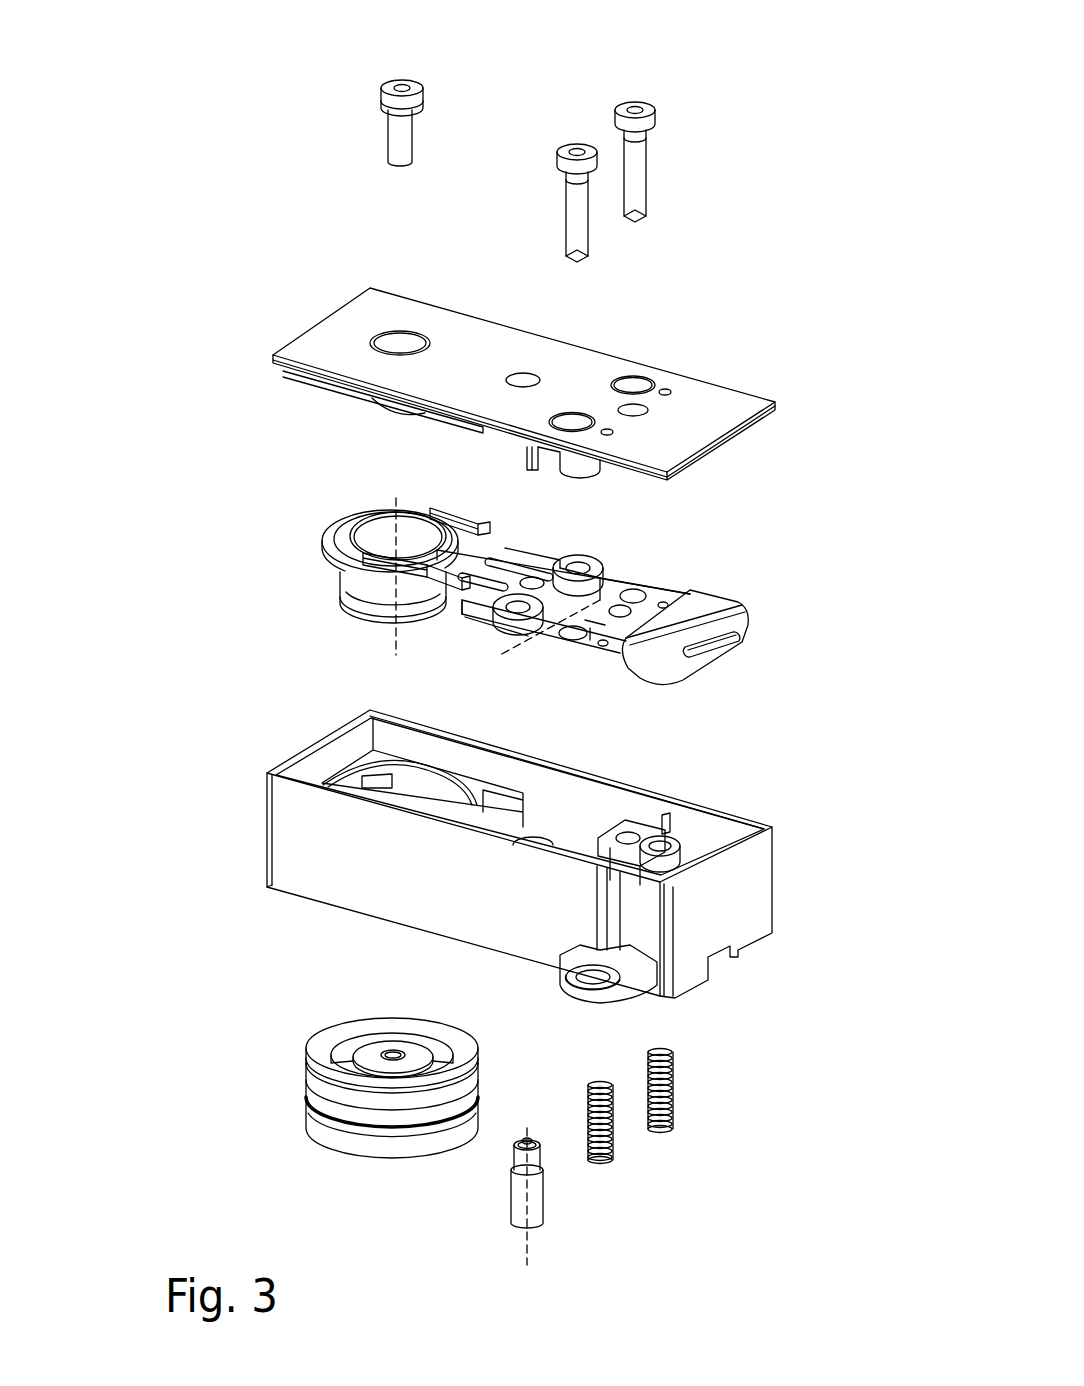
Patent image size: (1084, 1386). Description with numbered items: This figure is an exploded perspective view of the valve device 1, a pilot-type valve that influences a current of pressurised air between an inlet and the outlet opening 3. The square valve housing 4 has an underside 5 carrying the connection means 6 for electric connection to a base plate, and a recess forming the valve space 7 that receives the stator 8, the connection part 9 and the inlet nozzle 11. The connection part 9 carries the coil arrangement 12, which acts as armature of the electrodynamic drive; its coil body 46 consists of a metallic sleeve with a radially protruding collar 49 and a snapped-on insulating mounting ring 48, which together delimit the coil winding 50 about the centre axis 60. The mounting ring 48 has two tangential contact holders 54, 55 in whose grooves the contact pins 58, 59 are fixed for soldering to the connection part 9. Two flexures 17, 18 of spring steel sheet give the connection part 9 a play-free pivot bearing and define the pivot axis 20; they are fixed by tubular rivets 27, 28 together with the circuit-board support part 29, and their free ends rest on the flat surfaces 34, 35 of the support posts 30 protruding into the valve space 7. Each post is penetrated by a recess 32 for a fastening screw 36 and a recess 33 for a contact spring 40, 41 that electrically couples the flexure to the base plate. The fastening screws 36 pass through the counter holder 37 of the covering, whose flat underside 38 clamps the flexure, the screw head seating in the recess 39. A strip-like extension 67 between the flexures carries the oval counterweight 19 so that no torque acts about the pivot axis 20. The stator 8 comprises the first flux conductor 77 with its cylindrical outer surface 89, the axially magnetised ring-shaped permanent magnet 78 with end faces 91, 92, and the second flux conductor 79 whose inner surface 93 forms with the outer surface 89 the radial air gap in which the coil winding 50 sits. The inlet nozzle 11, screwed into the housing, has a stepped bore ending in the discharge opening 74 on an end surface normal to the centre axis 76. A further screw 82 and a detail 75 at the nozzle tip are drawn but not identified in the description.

The valve device 1 is at (768, 112).
The outlet opening 3 is at (524, 378).
The valve housing 4 is at (755, 878).
The underside 5 is at (290, 898).
The connection means 6 is at (692, 1094).
The valve space 7 is at (728, 824).
The stator 8 is at (290, 1123).
The connection part 9 is at (540, 558).
The inlet nozzle 11 is at (504, 1242).
The coil arrangement 12 is at (312, 584).
The flexure 17 is at (592, 642).
The flexure 18 is at (652, 597).
The counterweight 19 is at (712, 603).
The pivot axis 20 is at (648, 560).
The tubular rivet 27 is at (505, 615).
The tubular rivet 28 is at (595, 570).
The support part 29 is at (472, 630).
The support post 30 is at (618, 812).
The recess 32 is at (628, 835).
The recess 33 is at (670, 843).
The surface 34 is at (675, 893).
The surface 35 is at (662, 825).
The fastening screw 36 is at (578, 145).
The counter holder 37 is at (522, 455).
The underside 38 is at (545, 478).
The recess 39 is at (574, 420).
The contact spring 40 is at (603, 1165).
The contact spring 41 is at (661, 1132).
The coil body 46 is at (345, 525).
The mounting ring 48 is at (345, 556).
The circumferential collar 49 is at (360, 612).
The coil winding 50 is at (342, 620).
The contact holder 54 is at (392, 572).
The contact holder 55 is at (458, 516).
The contact pin 58 is at (455, 583).
The contact pin 59 is at (537, 558).
The centre axis 60 is at (393, 502).
The extension 67 is at (597, 612).
The discharge opening 74 is at (538, 1128).
The pin tip 75 is at (525, 1138).
The centre axis 76 is at (530, 1250).
The first flux conductor 77 is at (350, 1160).
The permanent magnet 78 is at (405, 1130).
The second flux conductor 79 is at (320, 1052).
The fastening screw 82 is at (404, 86).
The outer surface 89 is at (428, 1072).
The end face 91 is at (325, 1132).
The end face 92 is at (315, 1090).
The inner surface 93 is at (420, 1040).